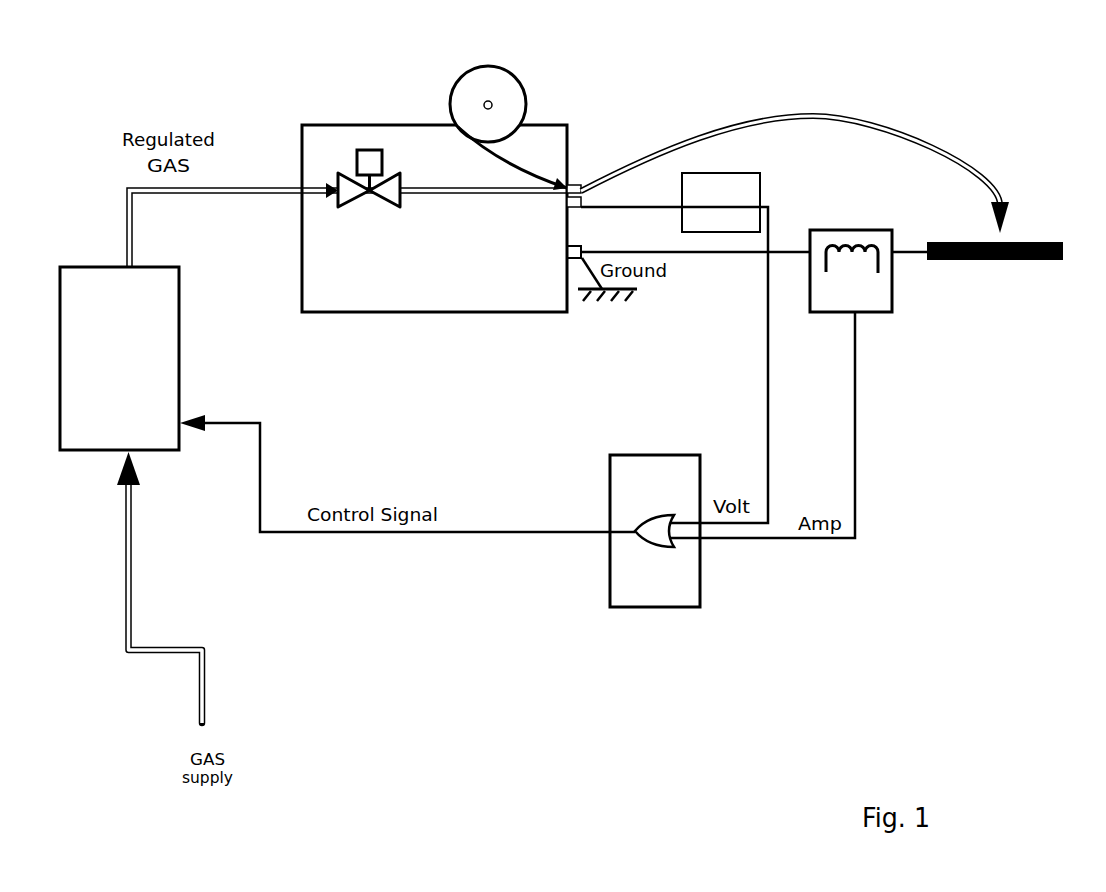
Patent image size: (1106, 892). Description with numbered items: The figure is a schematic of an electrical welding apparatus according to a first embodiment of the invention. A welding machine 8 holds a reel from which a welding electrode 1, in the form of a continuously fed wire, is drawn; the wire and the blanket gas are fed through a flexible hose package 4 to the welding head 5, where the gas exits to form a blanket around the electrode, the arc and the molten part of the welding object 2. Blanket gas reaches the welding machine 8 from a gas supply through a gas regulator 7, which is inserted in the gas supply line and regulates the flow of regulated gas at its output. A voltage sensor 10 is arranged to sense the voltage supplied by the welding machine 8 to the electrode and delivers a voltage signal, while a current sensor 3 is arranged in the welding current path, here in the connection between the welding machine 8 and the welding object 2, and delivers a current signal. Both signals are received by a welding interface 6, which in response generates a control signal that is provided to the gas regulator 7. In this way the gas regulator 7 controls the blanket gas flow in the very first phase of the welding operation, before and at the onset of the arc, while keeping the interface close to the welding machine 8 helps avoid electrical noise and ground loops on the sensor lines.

The welding electrode 1 is at (508, 128).
The welding object 2 is at (1005, 263).
The current sensor 3 is at (851, 247).
The flexible hose package 4 is at (790, 119).
The welding head 5 is at (1009, 217).
The welding interface device 6 is at (656, 559).
The gas regulator 7 is at (119, 358).
The welding machine 8 is at (441, 218).
The voltage sensor 10 is at (730, 190).